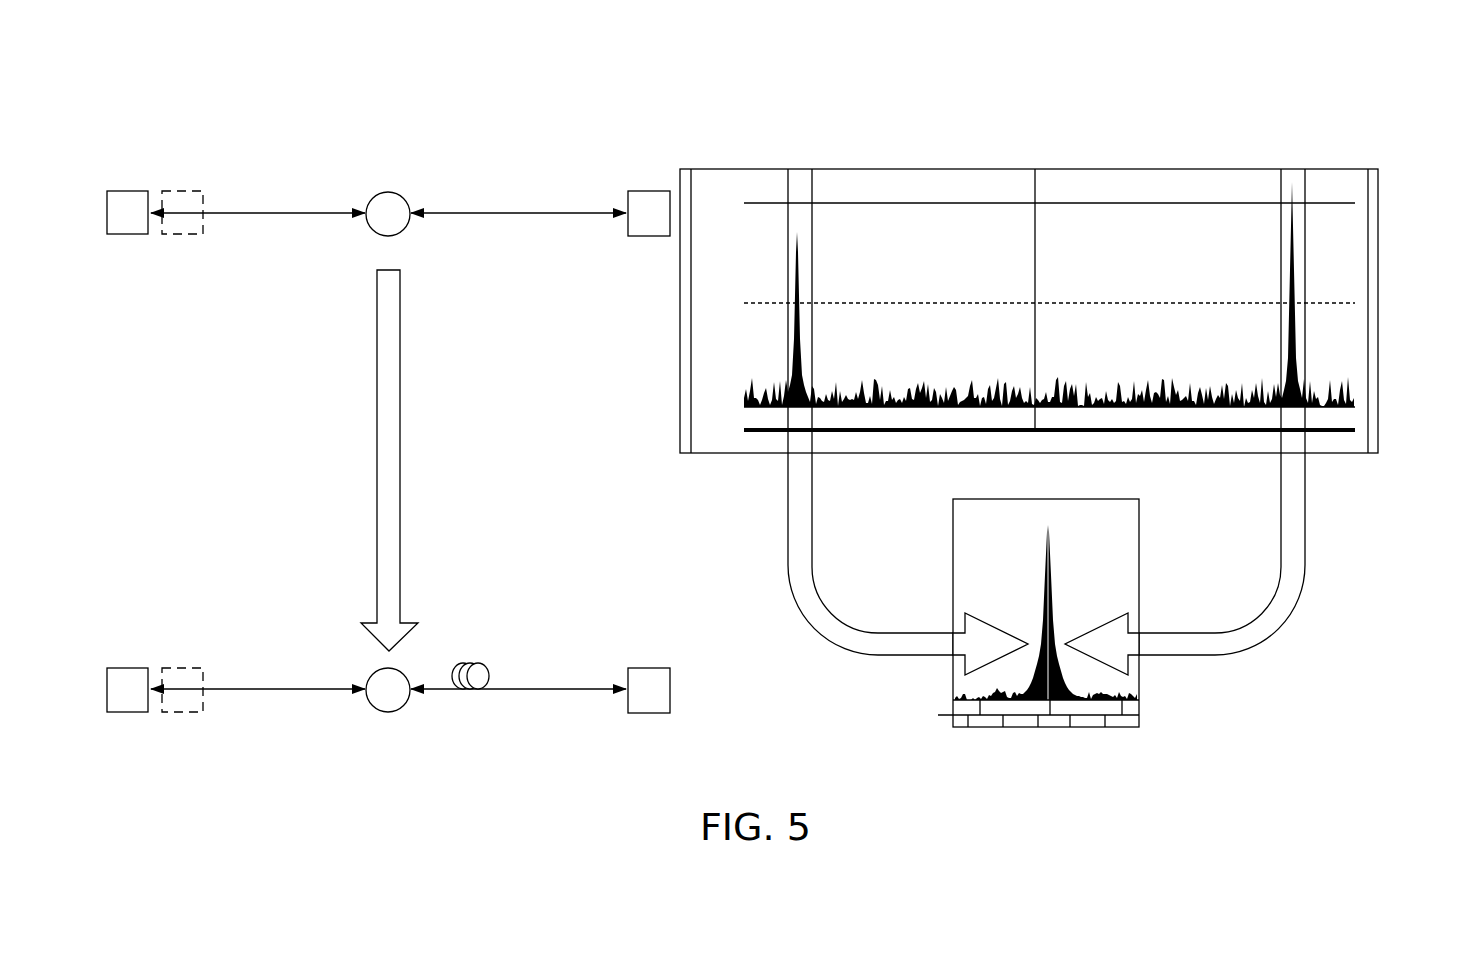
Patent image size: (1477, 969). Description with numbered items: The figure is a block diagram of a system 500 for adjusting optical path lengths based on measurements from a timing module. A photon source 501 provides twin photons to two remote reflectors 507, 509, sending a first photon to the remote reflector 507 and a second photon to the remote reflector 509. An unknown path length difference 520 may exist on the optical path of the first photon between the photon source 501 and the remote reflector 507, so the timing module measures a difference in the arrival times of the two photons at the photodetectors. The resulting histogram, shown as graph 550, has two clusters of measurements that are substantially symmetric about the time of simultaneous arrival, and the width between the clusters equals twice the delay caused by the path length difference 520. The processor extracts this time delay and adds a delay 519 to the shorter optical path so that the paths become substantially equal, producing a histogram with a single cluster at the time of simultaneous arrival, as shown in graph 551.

The system 500 is at (663, 92).
The photon source 501 is at (388, 199).
The remote reflector 507 is at (128, 191).
The remote reflector 509 is at (650, 191).
The delay 519 is at (486, 664).
The path length difference 520 is at (178, 236).
The graph 550 is at (1369, 190).
The graph 551 is at (1139, 700).